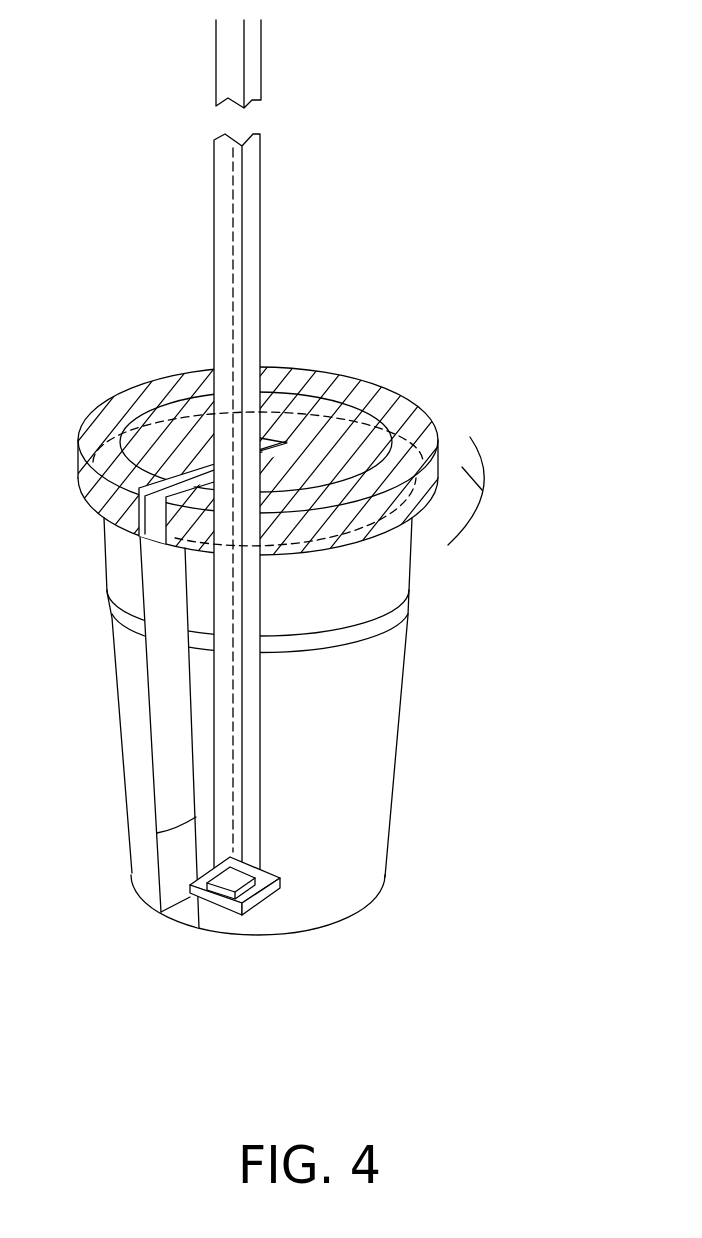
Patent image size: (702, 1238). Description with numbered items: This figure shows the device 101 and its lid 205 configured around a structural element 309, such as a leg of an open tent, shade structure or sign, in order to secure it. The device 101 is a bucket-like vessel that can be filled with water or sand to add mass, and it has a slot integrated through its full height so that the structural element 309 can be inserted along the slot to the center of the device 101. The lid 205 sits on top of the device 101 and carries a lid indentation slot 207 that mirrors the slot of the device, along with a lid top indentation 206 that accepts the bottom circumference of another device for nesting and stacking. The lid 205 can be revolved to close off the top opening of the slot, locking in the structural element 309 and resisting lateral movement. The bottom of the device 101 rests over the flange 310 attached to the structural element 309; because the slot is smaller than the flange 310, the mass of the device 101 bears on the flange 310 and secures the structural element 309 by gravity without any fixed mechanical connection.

The device 101 is at (394, 772).
The lid 205 is at (485, 489).
The lid top indentation 206 is at (325, 399).
The lid indentation slot 207 is at (147, 515).
The structural element 309 is at (262, 276).
The flange 310 is at (259, 918).